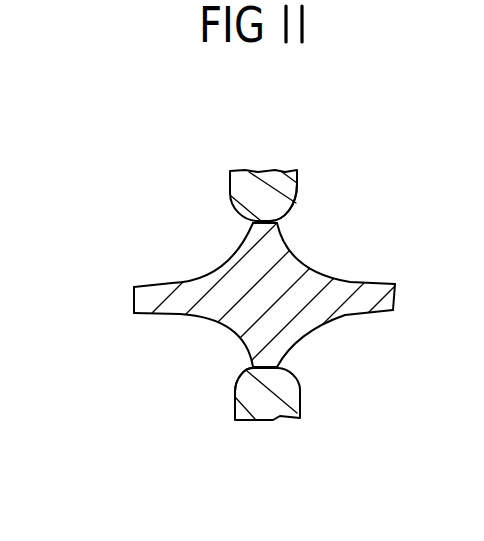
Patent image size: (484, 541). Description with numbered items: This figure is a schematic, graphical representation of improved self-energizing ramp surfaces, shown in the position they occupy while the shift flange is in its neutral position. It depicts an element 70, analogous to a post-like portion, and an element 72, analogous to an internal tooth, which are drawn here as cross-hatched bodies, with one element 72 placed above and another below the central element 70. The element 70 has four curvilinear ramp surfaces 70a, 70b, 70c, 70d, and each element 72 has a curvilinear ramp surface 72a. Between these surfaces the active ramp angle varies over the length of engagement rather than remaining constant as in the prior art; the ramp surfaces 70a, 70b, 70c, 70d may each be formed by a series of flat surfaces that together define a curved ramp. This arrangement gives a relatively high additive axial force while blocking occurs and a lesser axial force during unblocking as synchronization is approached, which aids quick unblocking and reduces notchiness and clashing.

The element 70 is at (133, 298).
The curvilinear ramp surface 70a is at (344, 283).
The curvilinear ramp surface 70b is at (352, 316).
The curvilinear ramp surface 70c is at (162, 284).
The curvilinear ramp surface 70d is at (190, 322).
The element 72 is at (249, 170).
The curvilinear ramp surface 72a is at (300, 220).